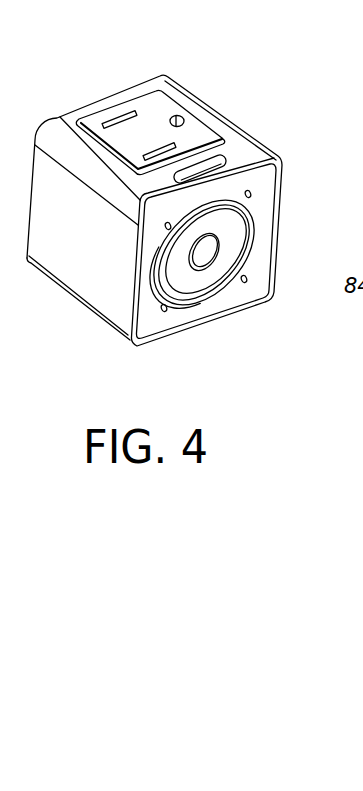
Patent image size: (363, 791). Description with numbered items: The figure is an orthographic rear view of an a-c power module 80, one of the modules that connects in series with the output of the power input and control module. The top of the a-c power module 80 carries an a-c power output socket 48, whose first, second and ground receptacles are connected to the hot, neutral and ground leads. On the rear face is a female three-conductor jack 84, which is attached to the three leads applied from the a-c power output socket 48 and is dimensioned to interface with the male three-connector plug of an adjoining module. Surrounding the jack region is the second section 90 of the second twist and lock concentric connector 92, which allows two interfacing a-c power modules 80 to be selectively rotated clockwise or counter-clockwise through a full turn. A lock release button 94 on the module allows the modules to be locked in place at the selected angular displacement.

The a-c power output socket 48 is at (162, 103).
The a-c power module 80 is at (98, 252).
The female three-conductor jack 84 is at (218, 236).
The second section 90 is at (220, 269).
The second twist and lock concentric connector 92 is at (204, 301).
The lock release button 94 is at (203, 165).